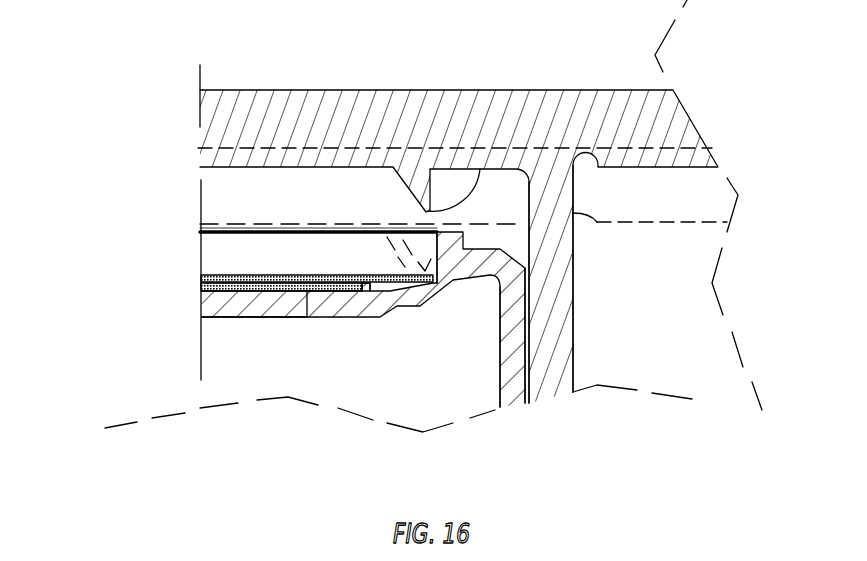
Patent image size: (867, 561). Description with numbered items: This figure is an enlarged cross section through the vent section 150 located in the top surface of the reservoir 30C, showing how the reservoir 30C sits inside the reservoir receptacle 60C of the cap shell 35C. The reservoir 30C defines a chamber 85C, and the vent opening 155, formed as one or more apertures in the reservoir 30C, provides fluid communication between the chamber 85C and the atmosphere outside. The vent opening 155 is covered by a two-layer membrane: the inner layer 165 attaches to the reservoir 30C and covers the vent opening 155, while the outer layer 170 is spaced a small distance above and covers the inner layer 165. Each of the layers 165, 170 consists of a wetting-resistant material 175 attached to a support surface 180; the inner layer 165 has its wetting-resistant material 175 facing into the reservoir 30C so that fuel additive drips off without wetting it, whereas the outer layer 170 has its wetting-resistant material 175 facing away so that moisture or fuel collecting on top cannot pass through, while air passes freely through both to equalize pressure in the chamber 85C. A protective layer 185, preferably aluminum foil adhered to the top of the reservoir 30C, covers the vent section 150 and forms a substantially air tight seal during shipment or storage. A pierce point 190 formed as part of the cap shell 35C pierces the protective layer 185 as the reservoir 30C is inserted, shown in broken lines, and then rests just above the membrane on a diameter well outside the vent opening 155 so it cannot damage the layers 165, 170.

The cap shell 35C is at (707, 138).
The reservoir receptacle 60C is at (513, 236).
The reservoir 30C is at (510, 385).
The chamber 85C is at (358, 377).
The vent section 150 is at (141, 364).
The vent opening 155 is at (307, 317).
The inner layer 165 is at (268, 295).
The outer layer 170 is at (317, 277).
The wetting-resistant material 175 is at (204, 277).
The support surface 180 is at (228, 258).
The protective layer 185 is at (260, 231).
The pierce point 190 is at (480, 169).